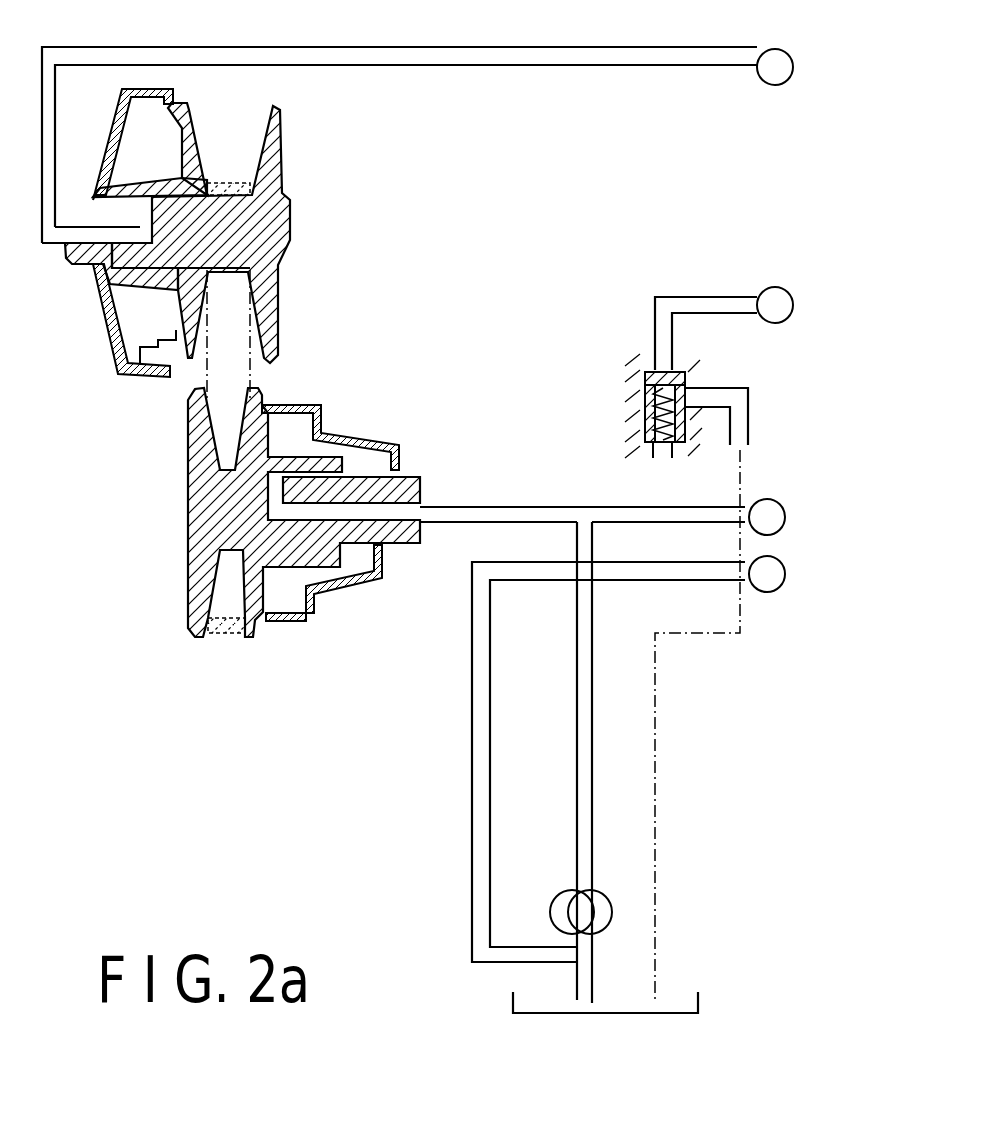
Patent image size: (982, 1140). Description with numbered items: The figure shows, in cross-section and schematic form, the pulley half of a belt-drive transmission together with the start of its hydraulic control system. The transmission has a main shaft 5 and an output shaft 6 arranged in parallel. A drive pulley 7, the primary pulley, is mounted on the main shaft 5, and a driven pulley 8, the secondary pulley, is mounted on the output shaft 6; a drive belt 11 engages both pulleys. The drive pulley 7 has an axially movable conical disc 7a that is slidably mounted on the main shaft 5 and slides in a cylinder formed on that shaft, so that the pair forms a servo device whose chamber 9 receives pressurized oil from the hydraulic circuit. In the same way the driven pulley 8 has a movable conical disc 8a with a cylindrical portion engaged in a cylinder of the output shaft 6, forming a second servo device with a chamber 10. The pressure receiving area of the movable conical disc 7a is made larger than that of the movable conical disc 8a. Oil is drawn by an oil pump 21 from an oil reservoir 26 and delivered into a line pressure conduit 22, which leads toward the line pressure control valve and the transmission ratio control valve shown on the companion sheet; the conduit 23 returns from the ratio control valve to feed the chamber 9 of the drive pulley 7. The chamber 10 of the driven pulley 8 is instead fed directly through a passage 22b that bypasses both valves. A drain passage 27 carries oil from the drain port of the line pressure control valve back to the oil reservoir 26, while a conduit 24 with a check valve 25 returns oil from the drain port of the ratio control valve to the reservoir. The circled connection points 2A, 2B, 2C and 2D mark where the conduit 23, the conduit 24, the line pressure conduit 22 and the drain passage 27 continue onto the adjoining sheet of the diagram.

The main shaft 5 is at (90, 256).
The output shaft 6 is at (412, 480).
The drive pulley 7 is at (293, 134).
The movable conical disc 7a is at (190, 128).
The driven pulley 8 is at (178, 546).
The movable conical disc 8a is at (245, 440).
The chamber 9 is at (155, 164).
The chamber 10 is at (357, 560).
The drive belt 11 is at (235, 632).
The oil pump 21 is at (600, 905).
The line pressure conduit 22 is at (710, 507).
The passage 22b is at (548, 506).
The conduit 23 is at (596, 48).
The conduit 24 is at (712, 297).
The check valve 25 is at (640, 410).
The oil reservoir 26 is at (698, 1003).
The drain passage 27 is at (626, 580).
The connection 2A is at (775, 67).
The connection 2B is at (775, 305).
The connection 2C is at (767, 517).
The connection 2D is at (767, 574).